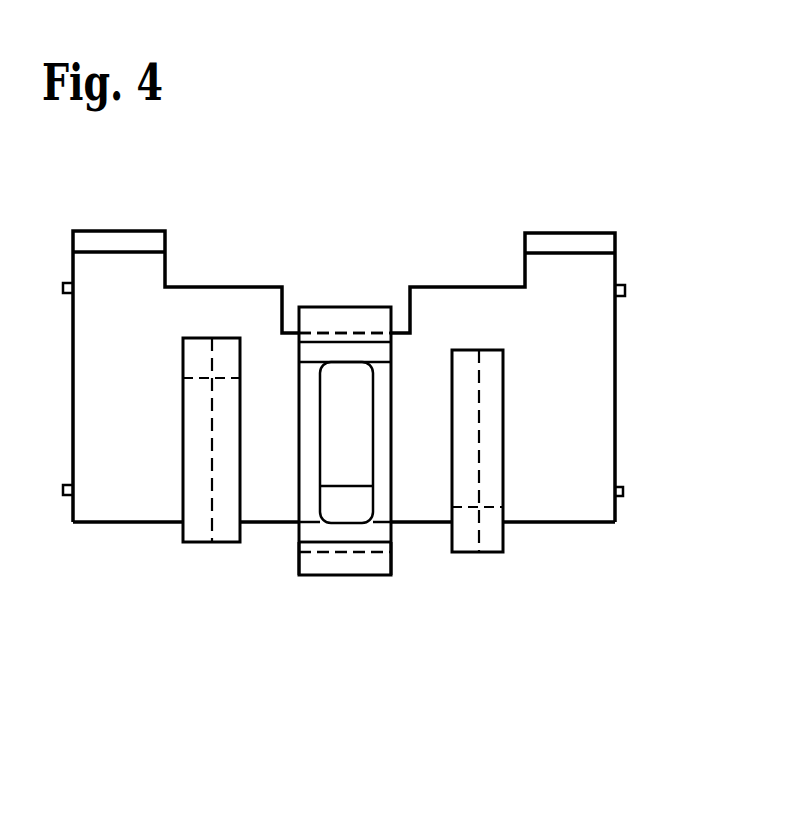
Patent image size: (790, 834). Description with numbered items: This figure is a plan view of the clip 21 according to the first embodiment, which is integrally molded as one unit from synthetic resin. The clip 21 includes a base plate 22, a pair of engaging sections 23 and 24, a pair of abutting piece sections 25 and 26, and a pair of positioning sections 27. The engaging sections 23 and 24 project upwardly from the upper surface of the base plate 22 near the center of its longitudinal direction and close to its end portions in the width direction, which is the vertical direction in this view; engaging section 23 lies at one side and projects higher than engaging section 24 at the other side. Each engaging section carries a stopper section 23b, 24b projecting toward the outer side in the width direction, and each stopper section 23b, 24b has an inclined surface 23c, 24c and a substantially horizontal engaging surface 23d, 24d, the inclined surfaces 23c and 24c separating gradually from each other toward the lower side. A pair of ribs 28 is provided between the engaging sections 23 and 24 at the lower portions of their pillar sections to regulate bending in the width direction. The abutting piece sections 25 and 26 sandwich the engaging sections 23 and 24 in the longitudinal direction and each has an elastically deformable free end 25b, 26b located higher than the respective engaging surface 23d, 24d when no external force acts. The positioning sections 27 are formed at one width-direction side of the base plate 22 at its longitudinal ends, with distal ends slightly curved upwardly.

The clip 21 is at (384, 100).
The base plate 22 is at (590, 408).
The engaging section 23 is at (412, 257).
The stopper section 23b is at (369, 302).
The inclined surface 23c is at (345, 313).
The engaging surface 23d is at (317, 328).
The engaging section 24 is at (304, 602).
The stopper section 24b is at (301, 580).
The inclined surface 24c is at (372, 565).
The engaging surface 24d is at (345, 553).
The abutting piece section 25 is at (552, 463).
The free end 25b is at (492, 438).
The abutting piece section 26 is at (161, 471).
The free end 26b is at (187, 487).
The positioning section 27 is at (110, 235).
The rib 28 is at (308, 443).